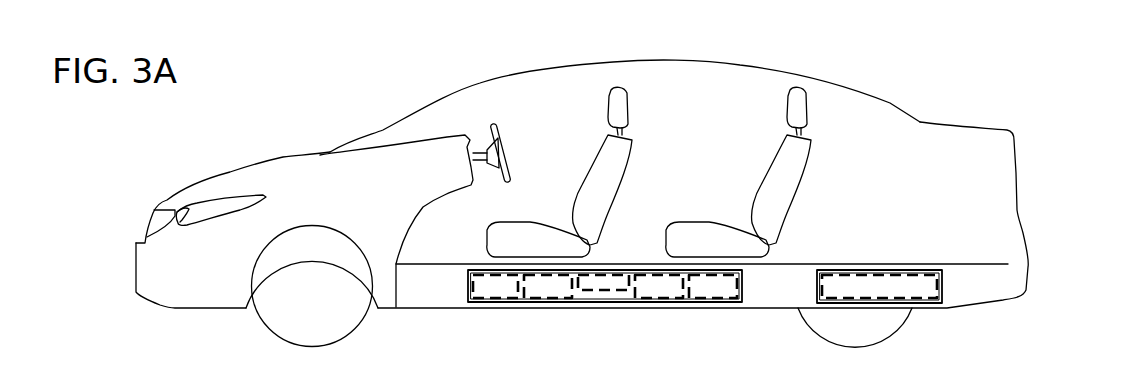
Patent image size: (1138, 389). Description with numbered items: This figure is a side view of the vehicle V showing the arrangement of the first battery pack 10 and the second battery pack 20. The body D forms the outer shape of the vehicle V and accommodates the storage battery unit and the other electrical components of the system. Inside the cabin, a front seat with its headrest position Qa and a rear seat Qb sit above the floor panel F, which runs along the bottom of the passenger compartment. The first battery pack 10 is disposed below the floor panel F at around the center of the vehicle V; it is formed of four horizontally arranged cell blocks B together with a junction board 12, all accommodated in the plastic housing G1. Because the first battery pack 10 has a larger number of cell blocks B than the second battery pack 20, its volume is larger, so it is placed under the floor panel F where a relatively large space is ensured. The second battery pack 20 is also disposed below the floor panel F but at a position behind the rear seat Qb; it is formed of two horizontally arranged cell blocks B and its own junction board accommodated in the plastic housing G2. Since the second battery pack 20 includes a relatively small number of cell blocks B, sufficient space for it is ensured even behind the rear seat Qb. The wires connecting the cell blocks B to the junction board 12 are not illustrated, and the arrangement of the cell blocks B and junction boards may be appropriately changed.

The vehicle V is at (1017, 117).
The body D is at (893, 105).
The front seat occupant position / headrest Qa is at (628, 105).
The rear seat Qb is at (807, 105).
The floor panel F is at (457, 264).
The first battery pack 10 is at (645, 265).
The second battery pack 20 is at (902, 270).
The cell block B is at (497, 299).
The junction board 12 is at (604, 291).
The plastic housing G1 is at (742, 286).
The plastic housing G2 is at (942, 287).